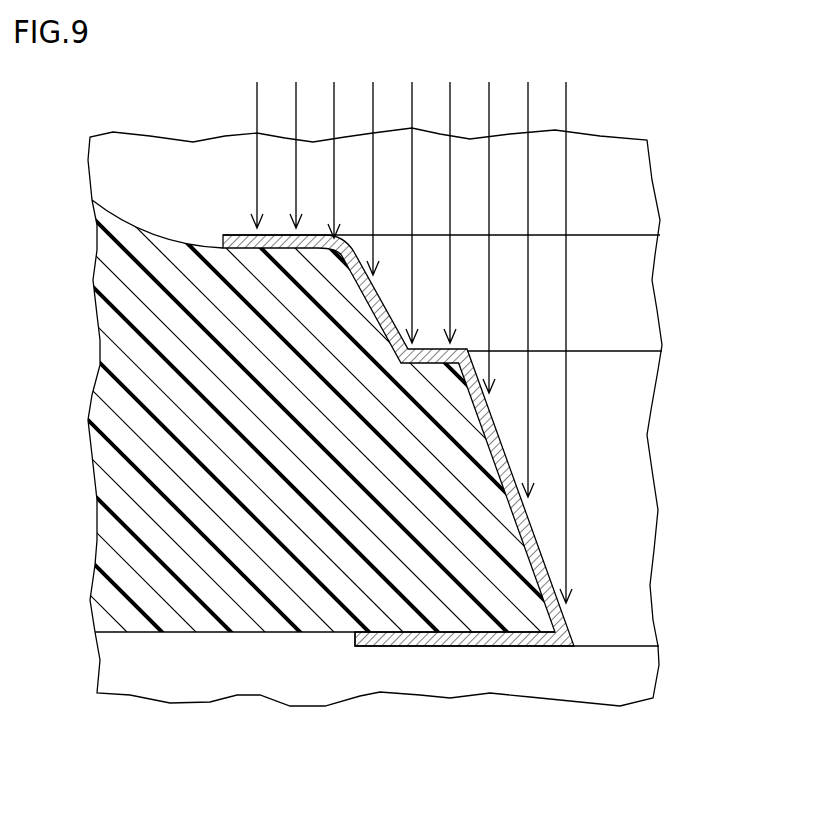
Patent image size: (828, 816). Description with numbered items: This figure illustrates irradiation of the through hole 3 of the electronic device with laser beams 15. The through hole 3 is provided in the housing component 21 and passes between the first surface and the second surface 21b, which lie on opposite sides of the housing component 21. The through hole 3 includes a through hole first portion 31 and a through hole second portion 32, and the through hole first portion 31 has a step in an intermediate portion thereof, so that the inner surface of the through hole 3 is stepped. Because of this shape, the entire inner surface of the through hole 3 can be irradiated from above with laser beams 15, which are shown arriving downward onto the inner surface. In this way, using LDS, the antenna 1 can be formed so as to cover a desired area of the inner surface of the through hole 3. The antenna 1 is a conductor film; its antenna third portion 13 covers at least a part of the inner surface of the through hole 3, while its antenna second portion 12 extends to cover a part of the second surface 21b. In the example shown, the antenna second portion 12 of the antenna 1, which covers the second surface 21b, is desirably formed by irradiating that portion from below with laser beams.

The antenna 1 is at (398, 514).
The through hole 3 is at (605, 160).
The antenna second portion 12 is at (371, 646).
The antenna third portion 13 is at (487, 453).
The laser beams 15 is at (567, 100).
The housing component 21 is at (127, 337).
The second surface 21b is at (185, 635).
The through hole first portion 31 is at (695, 250).
The through hole second portion 32 is at (695, 134).